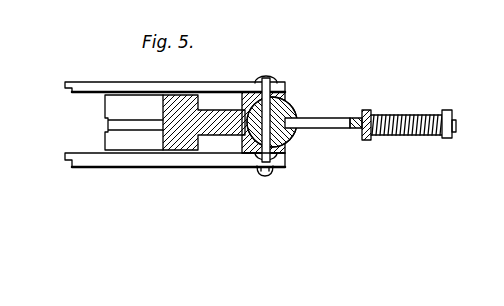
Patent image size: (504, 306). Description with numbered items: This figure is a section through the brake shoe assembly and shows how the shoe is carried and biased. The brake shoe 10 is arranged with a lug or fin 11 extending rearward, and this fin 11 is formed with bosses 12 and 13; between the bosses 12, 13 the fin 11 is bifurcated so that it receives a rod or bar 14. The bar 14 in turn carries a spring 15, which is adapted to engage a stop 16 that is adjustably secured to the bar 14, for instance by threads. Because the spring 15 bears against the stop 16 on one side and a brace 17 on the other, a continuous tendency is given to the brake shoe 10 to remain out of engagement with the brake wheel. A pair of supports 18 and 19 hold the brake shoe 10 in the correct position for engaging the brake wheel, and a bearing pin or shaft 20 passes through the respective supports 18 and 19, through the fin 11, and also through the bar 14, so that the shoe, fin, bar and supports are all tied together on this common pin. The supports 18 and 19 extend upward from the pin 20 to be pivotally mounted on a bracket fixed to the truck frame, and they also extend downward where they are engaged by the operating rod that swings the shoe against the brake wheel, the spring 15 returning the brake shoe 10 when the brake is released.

The brake shoe 10 is at (183, 153).
The fin 11 is at (218, 152).
The boss 12 is at (296, 104).
The boss 13 is at (298, 135).
The bar 14 is at (343, 131).
The spring 15 is at (422, 135).
The stop 16 is at (450, 110).
The brace 17 is at (366, 110).
The support 18 is at (288, 157).
The support 19 is at (289, 88).
The bearing pin 20 is at (238, 168).